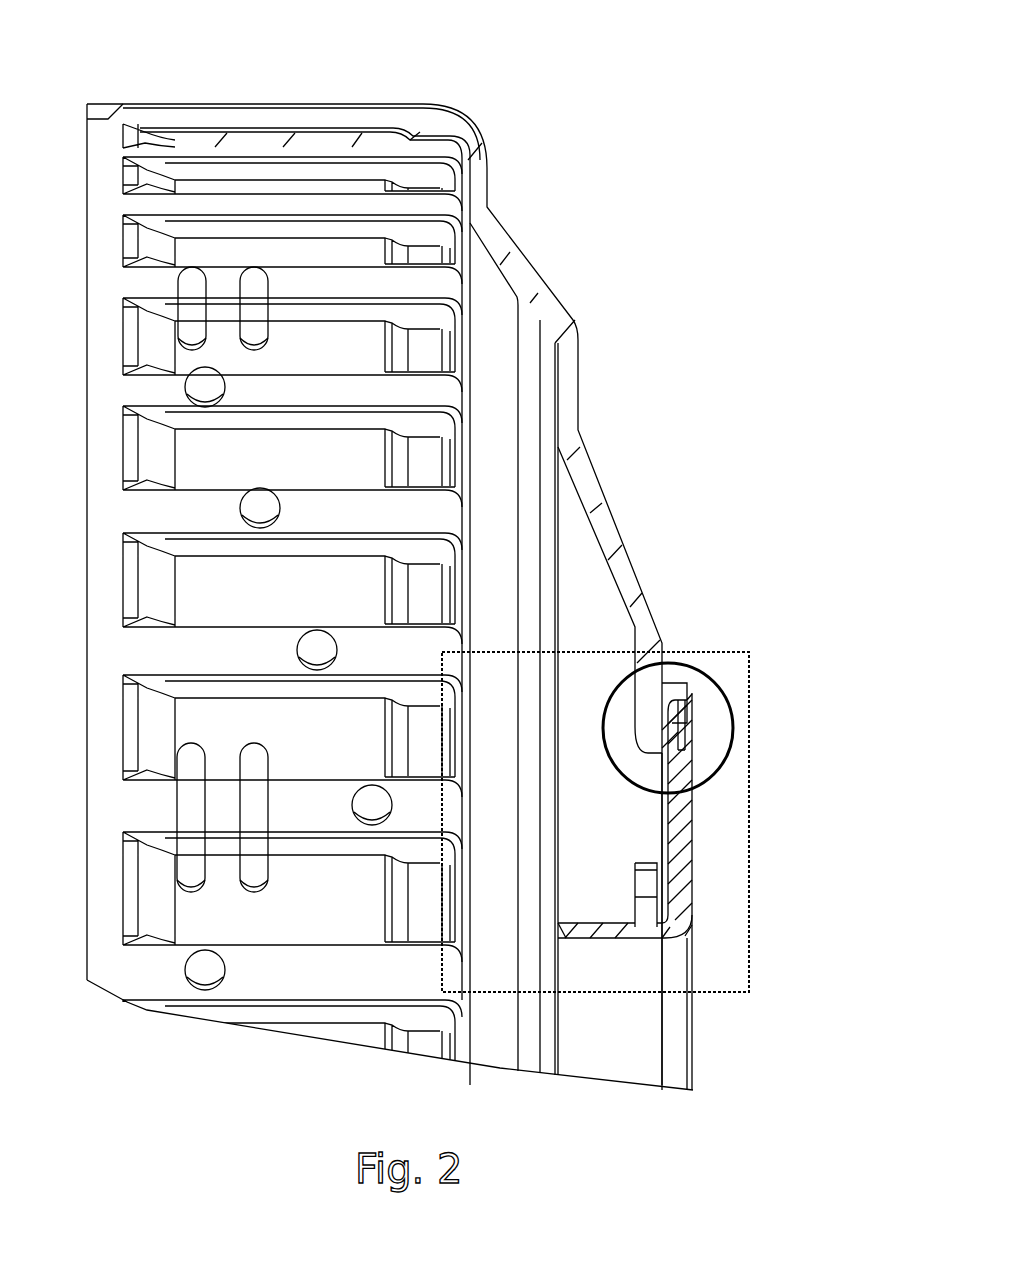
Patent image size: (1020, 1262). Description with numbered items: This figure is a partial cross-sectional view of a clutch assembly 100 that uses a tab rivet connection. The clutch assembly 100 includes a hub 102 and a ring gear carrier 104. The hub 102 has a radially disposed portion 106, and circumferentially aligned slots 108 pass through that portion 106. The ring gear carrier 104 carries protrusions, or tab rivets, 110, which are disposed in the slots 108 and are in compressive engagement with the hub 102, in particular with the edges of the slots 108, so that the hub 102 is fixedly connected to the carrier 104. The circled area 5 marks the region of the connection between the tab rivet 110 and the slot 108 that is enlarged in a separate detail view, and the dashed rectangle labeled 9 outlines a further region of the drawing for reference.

The clutch assembly 100 is at (588, 134).
The hub 102 is at (707, 932).
The ring gear carrier 104 is at (209, 96).
The radially disposed portion 106 is at (690, 863).
The slots 108 is at (678, 690).
The protrusions (tab rivets) 110 is at (672, 737).
The area 5 (detail area) 5 is at (680, 668).
The detail region for FIG. 9 is at (750, 778).